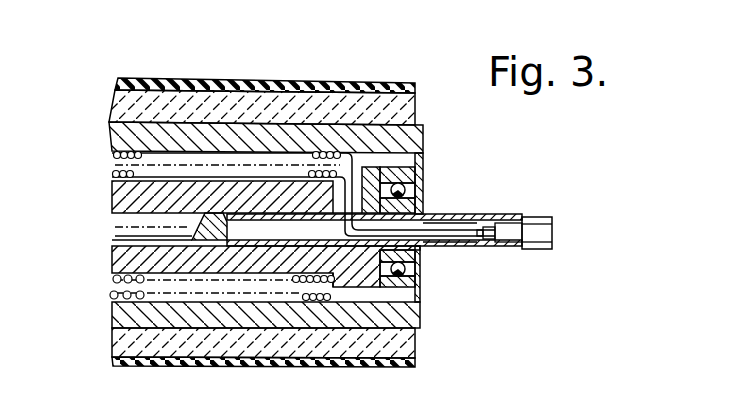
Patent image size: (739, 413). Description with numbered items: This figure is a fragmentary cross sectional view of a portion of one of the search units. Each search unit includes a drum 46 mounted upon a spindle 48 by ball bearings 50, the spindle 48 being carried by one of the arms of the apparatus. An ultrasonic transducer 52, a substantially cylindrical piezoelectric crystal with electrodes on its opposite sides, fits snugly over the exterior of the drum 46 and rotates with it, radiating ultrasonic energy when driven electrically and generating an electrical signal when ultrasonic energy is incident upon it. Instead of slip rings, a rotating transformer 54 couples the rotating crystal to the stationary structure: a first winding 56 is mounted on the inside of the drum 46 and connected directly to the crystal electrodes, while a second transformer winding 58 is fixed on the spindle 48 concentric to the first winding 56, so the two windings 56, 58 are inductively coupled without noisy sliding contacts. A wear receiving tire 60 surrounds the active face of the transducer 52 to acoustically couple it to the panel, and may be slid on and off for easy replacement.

The drum 46 is at (423, 139).
The spindle 48 is at (468, 215).
The ball bearings 50 is at (406, 190).
The ultrasonic transducer 52 is at (120, 105).
The rotating transformer 54 is at (109, 162).
The first winding 56 is at (108, 161).
The second transformer winding 58 is at (127, 185).
The tire 60 is at (165, 80).